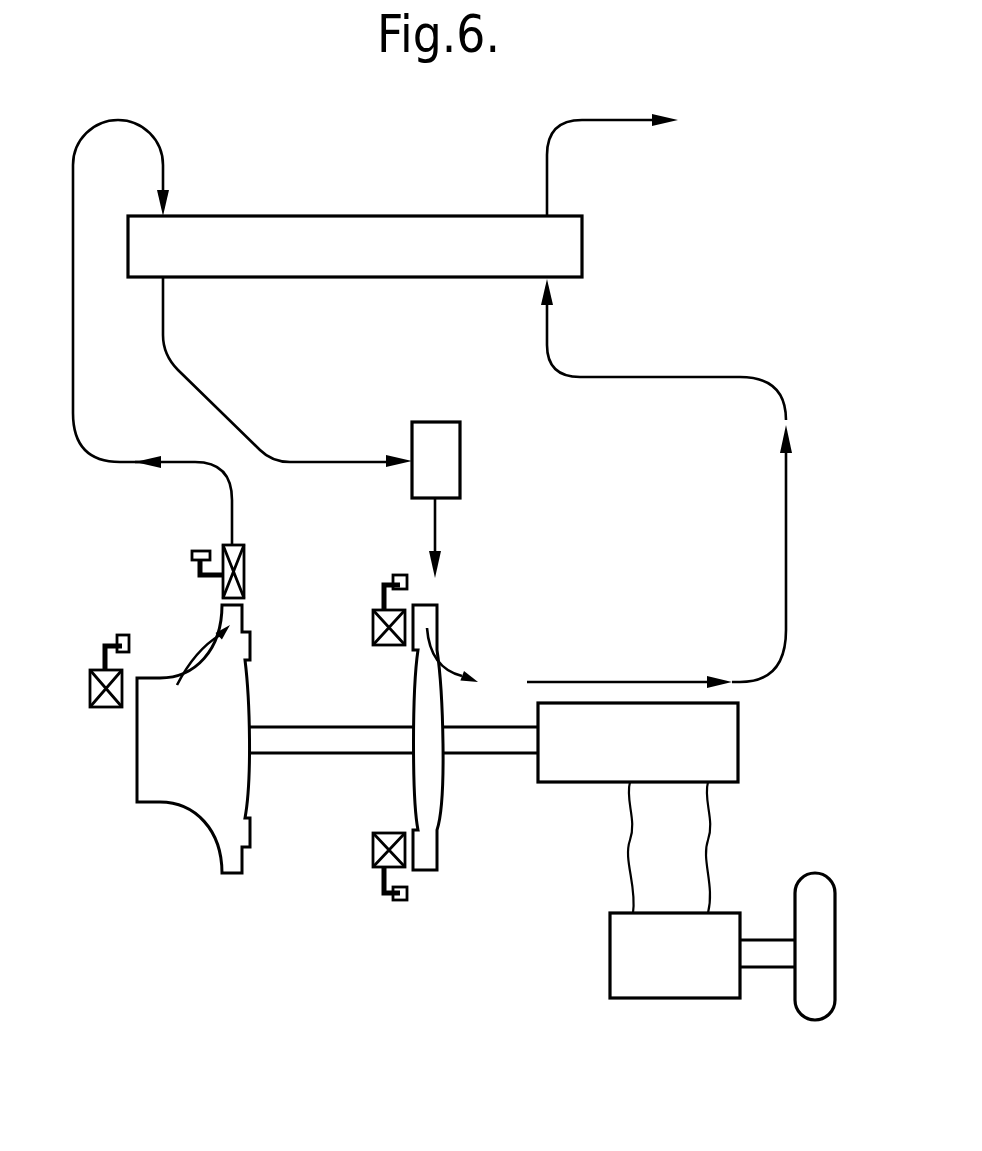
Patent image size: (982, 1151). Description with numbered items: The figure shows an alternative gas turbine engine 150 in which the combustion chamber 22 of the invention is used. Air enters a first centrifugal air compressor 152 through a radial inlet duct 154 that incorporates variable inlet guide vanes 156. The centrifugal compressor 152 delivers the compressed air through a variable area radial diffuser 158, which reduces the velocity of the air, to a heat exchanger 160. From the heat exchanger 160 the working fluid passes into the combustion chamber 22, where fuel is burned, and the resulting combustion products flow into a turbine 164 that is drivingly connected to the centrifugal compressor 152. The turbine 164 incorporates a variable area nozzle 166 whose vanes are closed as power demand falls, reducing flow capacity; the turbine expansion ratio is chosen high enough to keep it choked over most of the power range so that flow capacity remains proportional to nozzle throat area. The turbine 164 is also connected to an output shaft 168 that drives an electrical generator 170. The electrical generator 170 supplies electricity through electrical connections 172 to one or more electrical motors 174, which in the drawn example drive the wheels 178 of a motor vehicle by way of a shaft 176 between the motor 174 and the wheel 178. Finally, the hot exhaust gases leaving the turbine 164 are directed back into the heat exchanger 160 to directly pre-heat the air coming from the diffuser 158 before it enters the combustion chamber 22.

The combustion chamber 22 is at (452, 456).
The gas turbine engine 150 is at (646, 249).
The first centrifugal air compressor 152 is at (157, 787).
The radial inlet duct 154 is at (122, 740).
The variable inlet guide vanes 156 is at (90, 688).
The variable area radial diffuser 158 is at (222, 545).
The heat exchanger 160 is at (294, 215).
The turbine 164 is at (433, 833).
The variable area nozzle 166 is at (373, 617).
The output shaft 168 is at (492, 735).
The electrical generator 170 is at (712, 738).
The electrical connections 172 is at (705, 825).
The electrical motors 174 is at (643, 976).
The output shaft 176 is at (770, 952).
The wheels 178 is at (812, 1002).